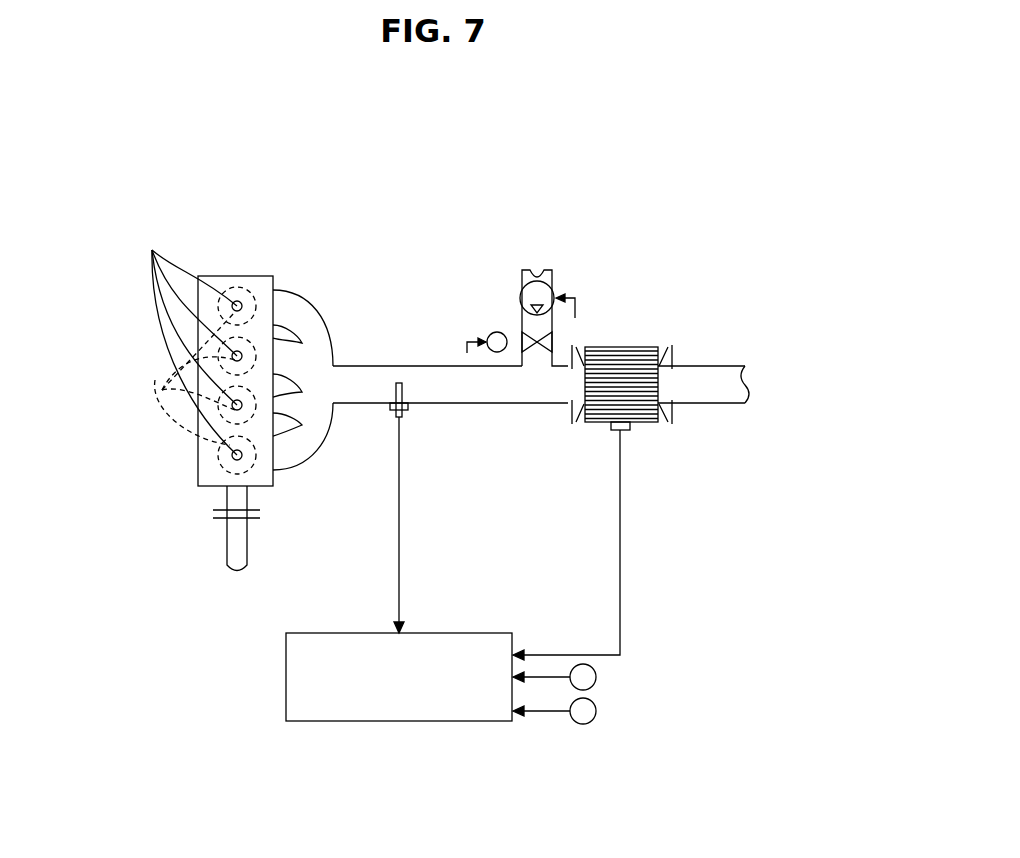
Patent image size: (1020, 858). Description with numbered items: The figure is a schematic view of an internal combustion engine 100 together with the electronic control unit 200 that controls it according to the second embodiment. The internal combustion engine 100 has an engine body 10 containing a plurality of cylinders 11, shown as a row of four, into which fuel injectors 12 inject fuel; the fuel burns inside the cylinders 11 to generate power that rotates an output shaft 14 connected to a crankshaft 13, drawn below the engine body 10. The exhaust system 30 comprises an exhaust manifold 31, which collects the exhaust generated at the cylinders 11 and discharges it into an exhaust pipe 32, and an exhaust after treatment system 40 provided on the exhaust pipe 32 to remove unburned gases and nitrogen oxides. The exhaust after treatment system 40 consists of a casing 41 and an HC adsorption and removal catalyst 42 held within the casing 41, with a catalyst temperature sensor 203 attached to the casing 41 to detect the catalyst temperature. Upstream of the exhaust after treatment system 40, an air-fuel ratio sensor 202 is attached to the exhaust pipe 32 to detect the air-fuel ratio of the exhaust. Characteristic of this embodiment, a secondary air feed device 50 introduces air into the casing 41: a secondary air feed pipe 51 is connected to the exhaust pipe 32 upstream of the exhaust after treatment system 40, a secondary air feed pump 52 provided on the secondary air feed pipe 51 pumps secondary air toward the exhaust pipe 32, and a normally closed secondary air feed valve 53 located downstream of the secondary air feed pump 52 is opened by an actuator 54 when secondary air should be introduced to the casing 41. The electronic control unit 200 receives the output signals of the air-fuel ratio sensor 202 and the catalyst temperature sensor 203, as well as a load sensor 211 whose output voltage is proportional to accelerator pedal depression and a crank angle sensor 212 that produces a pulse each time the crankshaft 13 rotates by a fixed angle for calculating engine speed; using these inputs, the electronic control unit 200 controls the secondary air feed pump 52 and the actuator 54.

The internal combustion engine 100 is at (466, 178).
The engine body 10 is at (255, 276).
The cylinders 11 is at (162, 390).
The fuel injectors 12 is at (195, 346).
The crankshaft 13 is at (225, 495).
The output shaft 14 is at (225, 540).
The exhaust system 30 is at (525, 235).
The exhaust manifold 31 is at (318, 447).
The exhaust pipe 32 is at (370, 365).
The exhaust after treatment system 40 is at (656, 346).
The casing 41 is at (628, 347).
The HC adsorption and removal catalyst 42 is at (640, 412).
The secondary air feed device 50 is at (576, 280).
The secondary air feed pipe 51 is at (520, 336).
The secondary air feed pump 52 is at (525, 290).
The secondary air feed valve 53 is at (560, 333).
The actuator 54 is at (487, 337).
The electronic control unit 200 is at (396, 721).
The air-fuel ratio sensor 202 is at (408, 408).
The catalyst temperature sensor 203 is at (612, 438).
The load sensor 211 is at (596, 677).
The crank angle sensor 212 is at (592, 722).